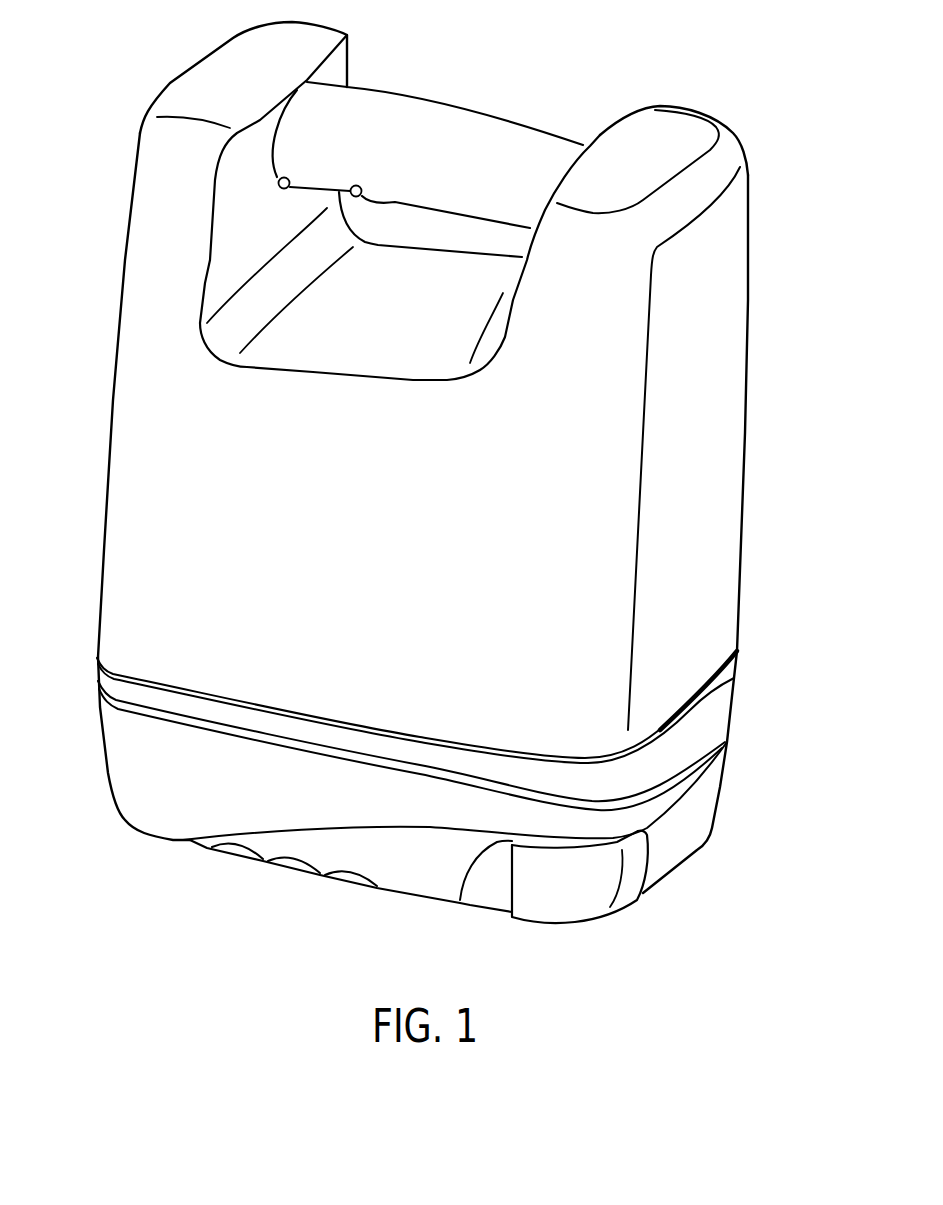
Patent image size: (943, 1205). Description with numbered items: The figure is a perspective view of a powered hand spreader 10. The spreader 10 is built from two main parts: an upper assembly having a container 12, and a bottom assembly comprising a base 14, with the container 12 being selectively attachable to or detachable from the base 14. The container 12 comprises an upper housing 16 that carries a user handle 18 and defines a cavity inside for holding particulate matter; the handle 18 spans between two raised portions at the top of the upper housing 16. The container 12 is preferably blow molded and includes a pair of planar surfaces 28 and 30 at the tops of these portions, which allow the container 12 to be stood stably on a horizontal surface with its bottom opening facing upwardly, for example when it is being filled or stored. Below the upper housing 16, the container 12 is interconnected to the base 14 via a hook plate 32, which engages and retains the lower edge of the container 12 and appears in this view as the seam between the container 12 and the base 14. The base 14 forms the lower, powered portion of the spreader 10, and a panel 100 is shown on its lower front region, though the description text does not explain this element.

The powered hand spreader 10 is at (729, 46).
The container 12 is at (748, 428).
The base 14 is at (713, 807).
The upper housing 16 is at (127, 410).
The user handle 18 is at (440, 123).
The planar surface 28 is at (233, 53).
The planar surface 30 is at (658, 127).
The hook plate 32 is at (735, 687).
The access panel 100 is at (593, 903).